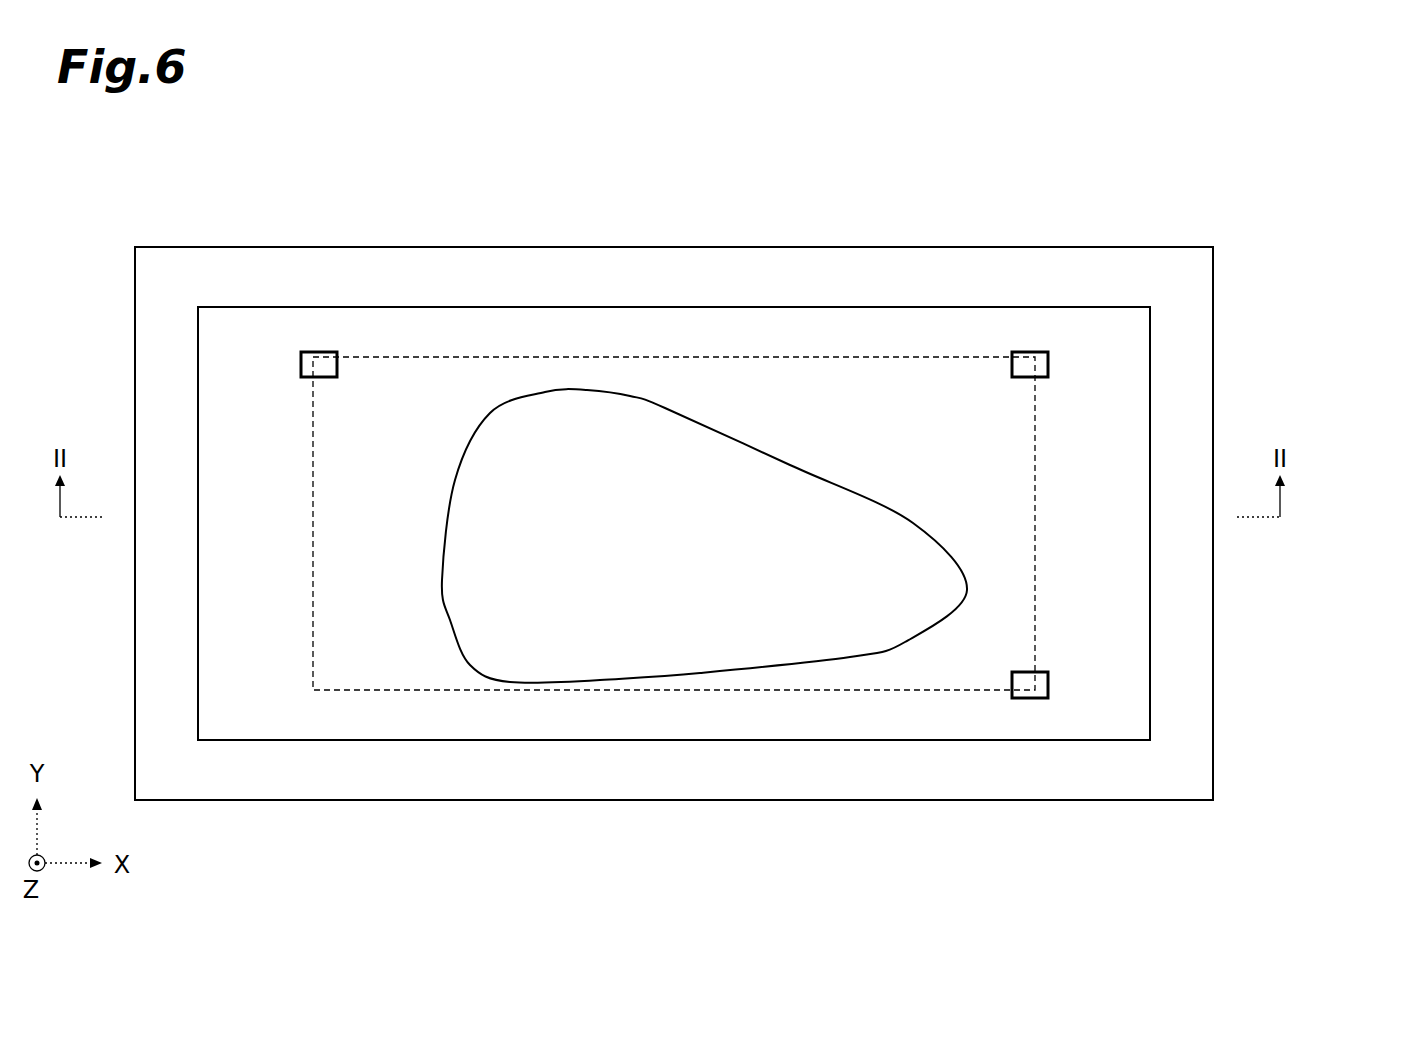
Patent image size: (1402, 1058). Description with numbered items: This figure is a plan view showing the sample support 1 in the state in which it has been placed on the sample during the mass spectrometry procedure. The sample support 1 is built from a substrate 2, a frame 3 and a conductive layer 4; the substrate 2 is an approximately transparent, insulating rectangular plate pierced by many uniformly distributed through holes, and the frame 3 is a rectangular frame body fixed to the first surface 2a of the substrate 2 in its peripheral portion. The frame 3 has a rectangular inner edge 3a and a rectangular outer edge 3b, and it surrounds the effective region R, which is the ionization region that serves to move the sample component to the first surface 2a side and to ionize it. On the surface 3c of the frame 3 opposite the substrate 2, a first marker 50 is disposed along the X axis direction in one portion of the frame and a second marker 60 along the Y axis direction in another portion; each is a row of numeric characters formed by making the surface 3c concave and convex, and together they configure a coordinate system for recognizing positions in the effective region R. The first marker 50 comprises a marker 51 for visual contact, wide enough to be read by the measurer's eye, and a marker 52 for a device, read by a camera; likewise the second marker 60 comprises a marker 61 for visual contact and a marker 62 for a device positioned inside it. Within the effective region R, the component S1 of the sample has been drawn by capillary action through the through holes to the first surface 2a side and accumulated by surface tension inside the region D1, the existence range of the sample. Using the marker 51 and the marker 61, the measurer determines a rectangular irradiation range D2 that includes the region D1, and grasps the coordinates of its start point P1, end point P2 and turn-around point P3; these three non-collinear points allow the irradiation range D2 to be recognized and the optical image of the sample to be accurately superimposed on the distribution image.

The sample support 1 is at (705, 456).
The substrate 2 is at (674, 516).
The first surface 2a is at (352, 305).
The frame 3 is at (705, 523).
The inner edge 3a is at (902, 740).
The outer edge 3b is at (1008, 801).
The surface of the frame 3c is at (1076, 780).
The conductive layer 4 is at (674, 459).
The first marker 50 is at (689, 232).
The marker for visual contact 51 is at (689, 232).
The marker for a device 52 is at (611, 257).
The second marker 60 is at (1277, 524).
The marker for visual contact 61 is at (1277, 524).
The marker for a device 62 is at (1216, 569).
The region D1 is at (683, 676).
The irradiation range D2 is at (710, 356).
The component of the sample S1 is at (530, 634).
The effective region R is at (268, 528).
The start point P1 is at (282, 345).
The end point P2 is at (1032, 703).
The turn-around point P3 is at (1052, 345).